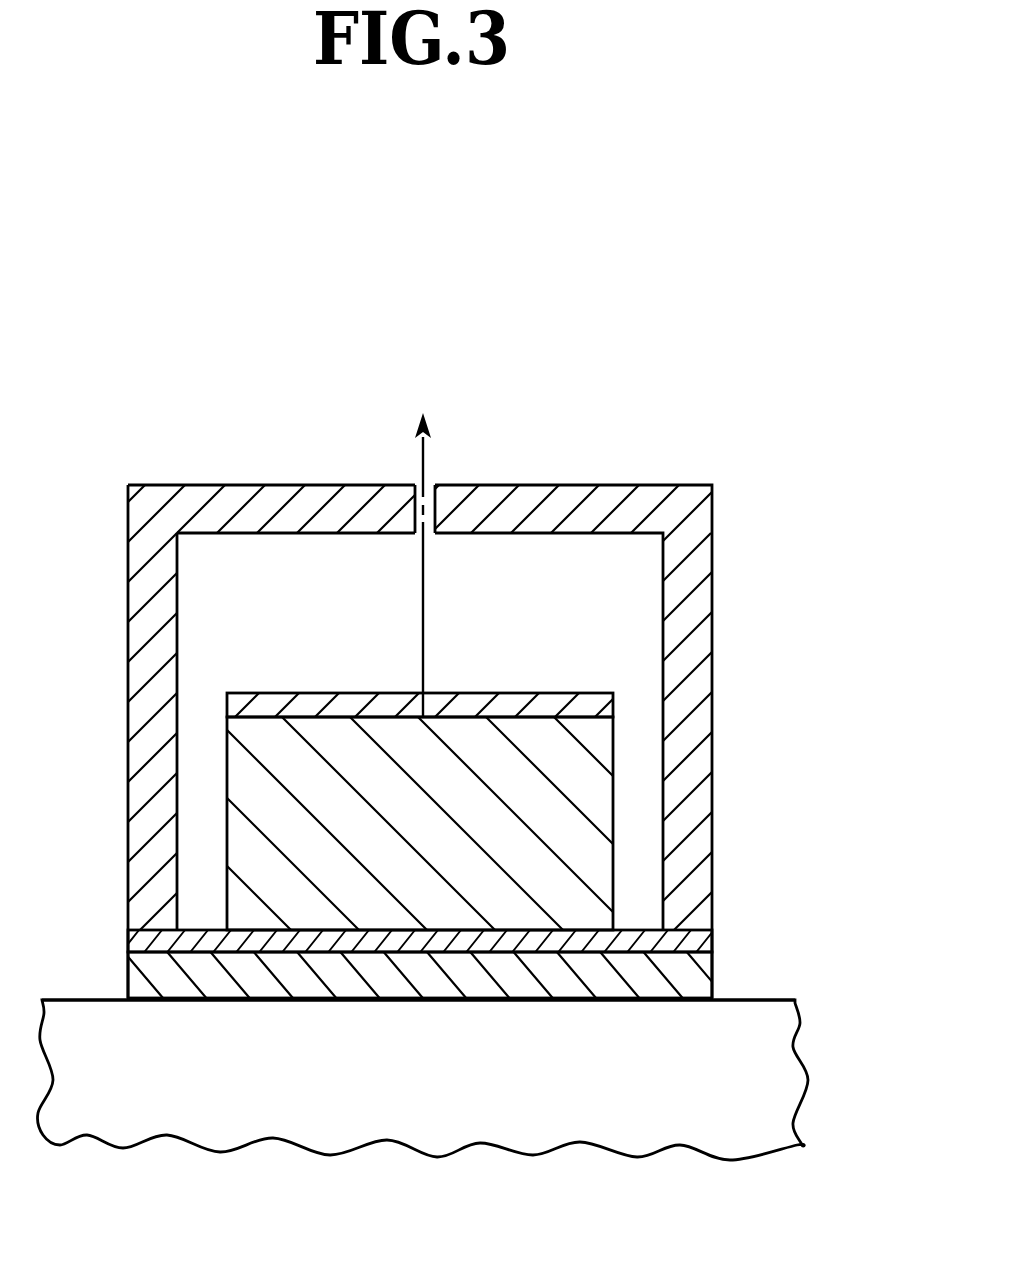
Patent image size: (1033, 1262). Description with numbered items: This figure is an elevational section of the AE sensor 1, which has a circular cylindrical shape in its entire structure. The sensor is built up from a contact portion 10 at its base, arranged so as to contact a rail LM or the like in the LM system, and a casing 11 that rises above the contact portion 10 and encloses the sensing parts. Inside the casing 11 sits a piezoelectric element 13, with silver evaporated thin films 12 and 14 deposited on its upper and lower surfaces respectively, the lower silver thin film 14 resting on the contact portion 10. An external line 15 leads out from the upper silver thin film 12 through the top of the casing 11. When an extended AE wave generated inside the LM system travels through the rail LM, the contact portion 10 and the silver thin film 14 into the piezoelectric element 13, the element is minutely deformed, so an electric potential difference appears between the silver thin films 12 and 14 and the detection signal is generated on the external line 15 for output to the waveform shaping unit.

The AE sensor 1 is at (763, 762).
The contact portion 10 is at (690, 980).
The casing 11 is at (695, 598).
The silver evaporated thin film 12 is at (230, 704).
The piezoelectric element 13 is at (240, 838).
The silver evaporated thin film 14 is at (690, 946).
The external line 15 is at (423, 588).
The rail LM is at (780, 1072).